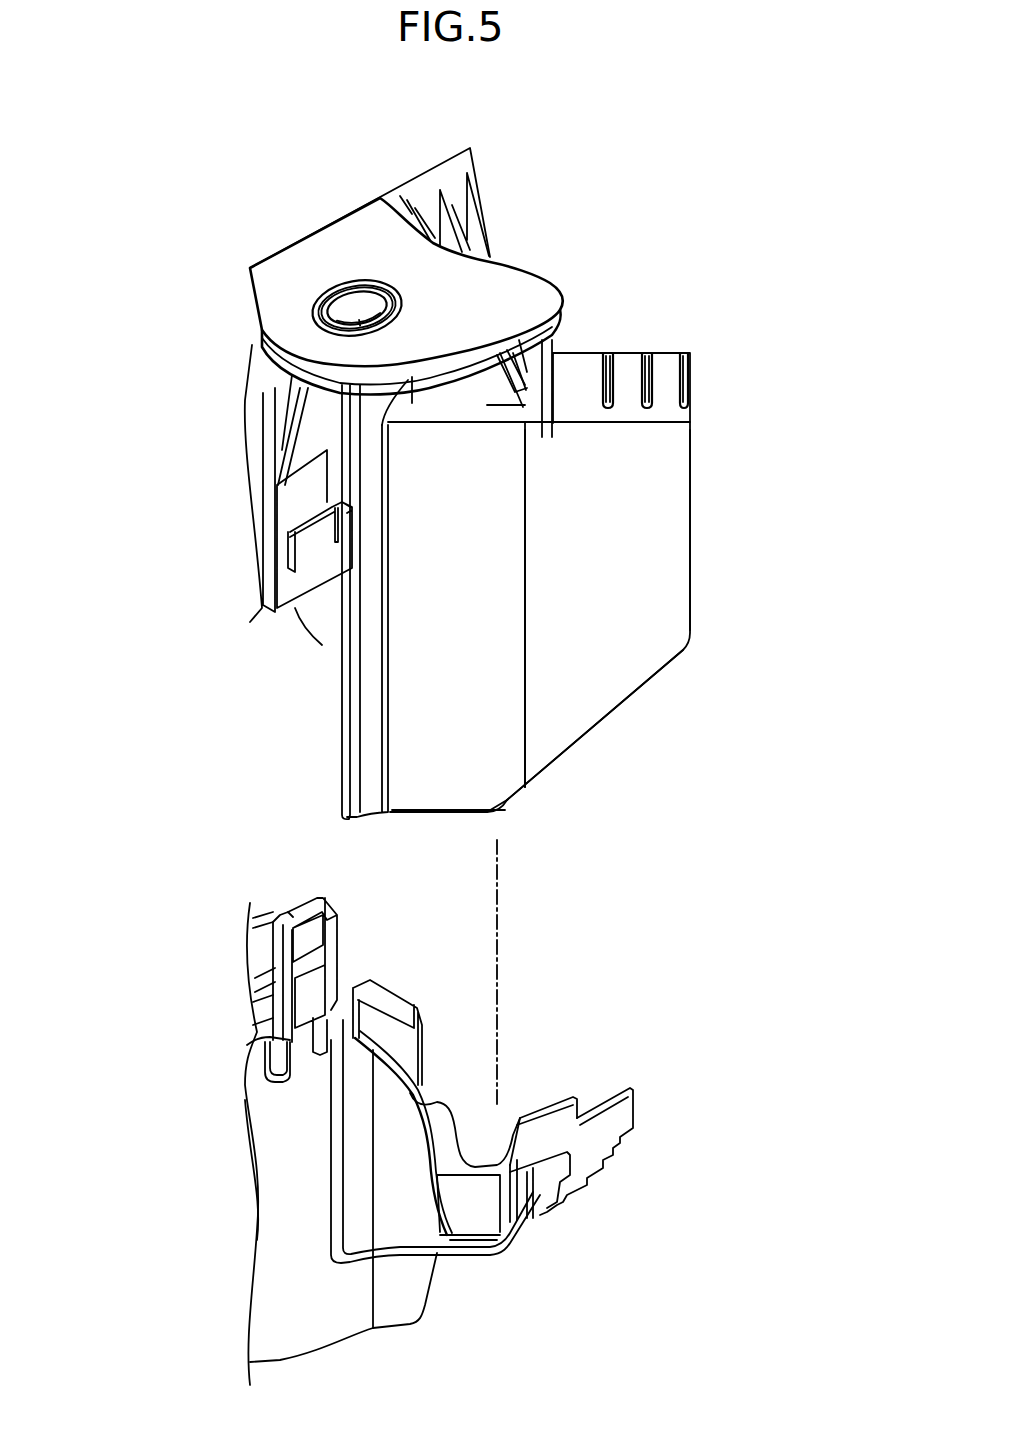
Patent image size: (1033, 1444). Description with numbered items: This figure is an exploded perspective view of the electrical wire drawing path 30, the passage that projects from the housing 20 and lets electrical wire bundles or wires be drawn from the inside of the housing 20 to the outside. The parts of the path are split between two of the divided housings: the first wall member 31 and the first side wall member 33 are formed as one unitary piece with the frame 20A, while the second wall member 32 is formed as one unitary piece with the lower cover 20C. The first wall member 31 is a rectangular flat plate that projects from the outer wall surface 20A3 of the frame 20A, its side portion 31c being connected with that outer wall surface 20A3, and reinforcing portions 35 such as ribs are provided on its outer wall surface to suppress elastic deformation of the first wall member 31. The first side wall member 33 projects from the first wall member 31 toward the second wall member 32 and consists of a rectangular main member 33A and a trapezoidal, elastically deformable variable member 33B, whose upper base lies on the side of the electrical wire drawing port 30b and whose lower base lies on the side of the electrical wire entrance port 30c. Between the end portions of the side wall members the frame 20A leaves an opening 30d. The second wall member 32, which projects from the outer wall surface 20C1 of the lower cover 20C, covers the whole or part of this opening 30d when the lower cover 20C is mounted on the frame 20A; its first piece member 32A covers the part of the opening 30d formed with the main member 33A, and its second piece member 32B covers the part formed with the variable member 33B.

The housing 20 is at (287, 731).
The frame 20A is at (208, 470).
The outer wall surface of the frame 20A3 is at (410, 190).
The lower cover 20C is at (222, 1100).
The outer wall surface of the lower cover 20C1 is at (277, 1147).
The electrical wire drawing path 30 is at (536, 675).
The first wall member 31 is at (590, 362).
The side portion of the first wall member 31c is at (407, 407).
The second wall member 32 is at (652, 1012).
The first piece member 32A is at (477, 1210).
The second piece member 32B is at (607, 1122).
The first side wall member 33 is at (700, 845).
The main member 33A is at (465, 693).
The variable member 33B is at (580, 660).
The reinforcing portions 35 is at (497, 250).
The electrical wire drawing port 30b is at (680, 525).
The electrical wire entrance port 30c is at (420, 1157).
The opening 30d is at (470, 800).